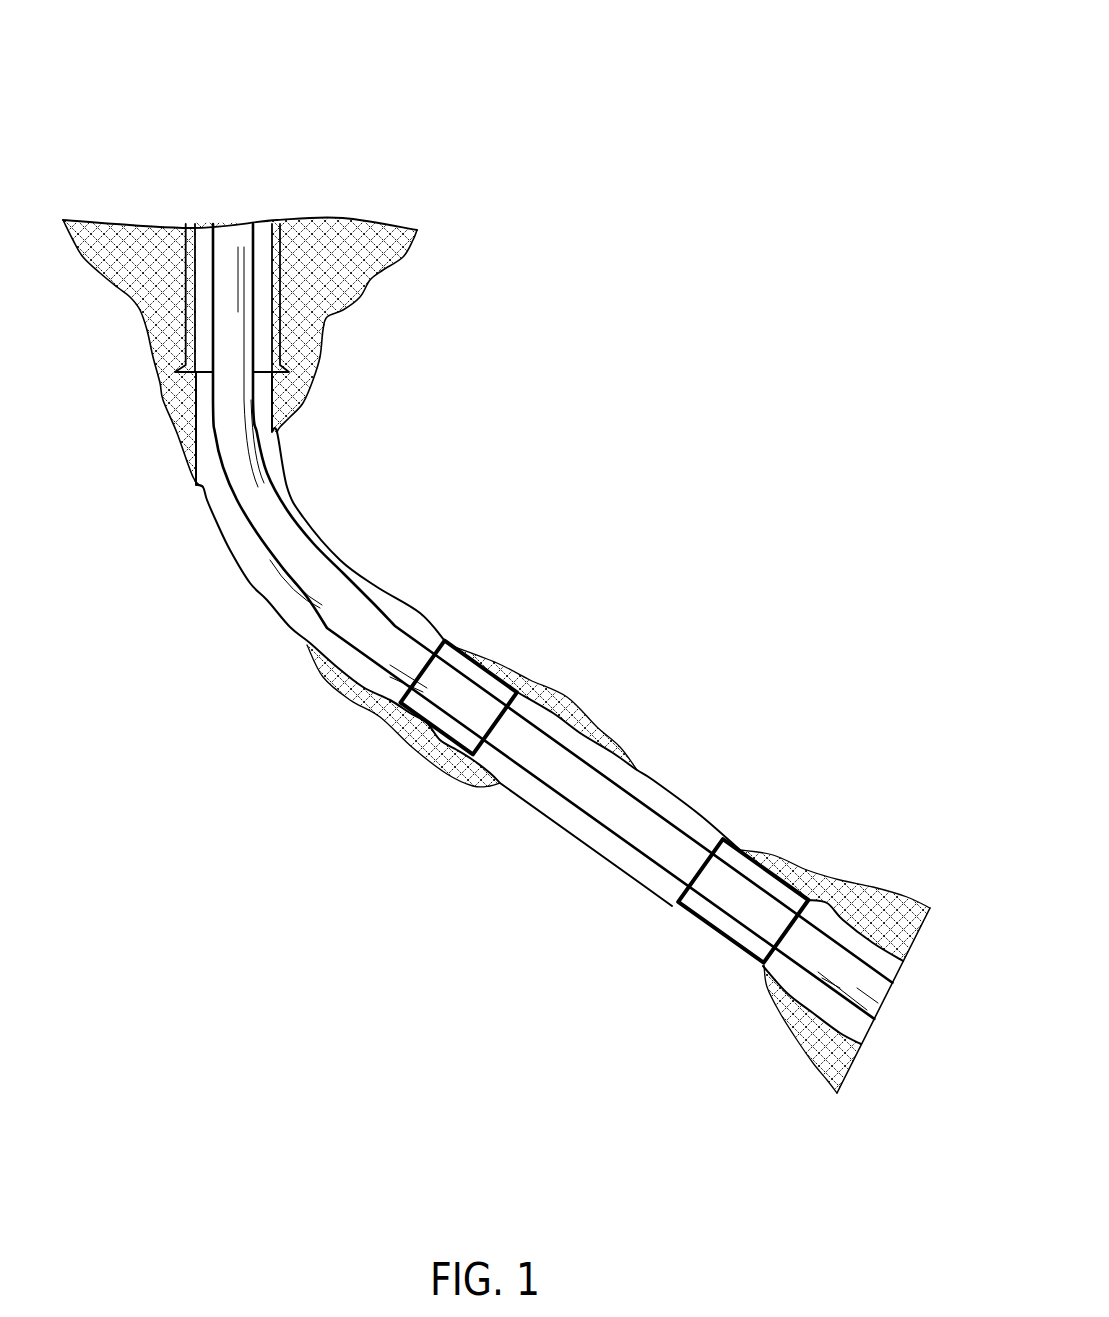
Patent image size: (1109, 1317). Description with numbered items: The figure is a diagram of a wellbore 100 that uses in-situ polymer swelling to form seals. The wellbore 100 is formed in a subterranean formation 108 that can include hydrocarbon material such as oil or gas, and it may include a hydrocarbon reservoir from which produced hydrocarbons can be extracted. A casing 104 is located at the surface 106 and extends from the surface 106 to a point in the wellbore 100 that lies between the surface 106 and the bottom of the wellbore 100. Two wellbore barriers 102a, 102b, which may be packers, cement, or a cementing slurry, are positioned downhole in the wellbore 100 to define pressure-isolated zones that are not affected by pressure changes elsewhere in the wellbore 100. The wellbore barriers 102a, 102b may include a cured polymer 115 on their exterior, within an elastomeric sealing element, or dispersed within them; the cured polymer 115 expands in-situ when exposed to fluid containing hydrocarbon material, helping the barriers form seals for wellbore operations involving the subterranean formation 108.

The wellbore 100 is at (748, 81).
The wellbore barrier 102a is at (497, 660).
The wellbore barrier 102b is at (743, 851).
The casing 104 is at (277, 283).
The surface 106 is at (343, 218).
The subterranean formation 108 is at (410, 260).
The cured polymer 115 is at (462, 645).